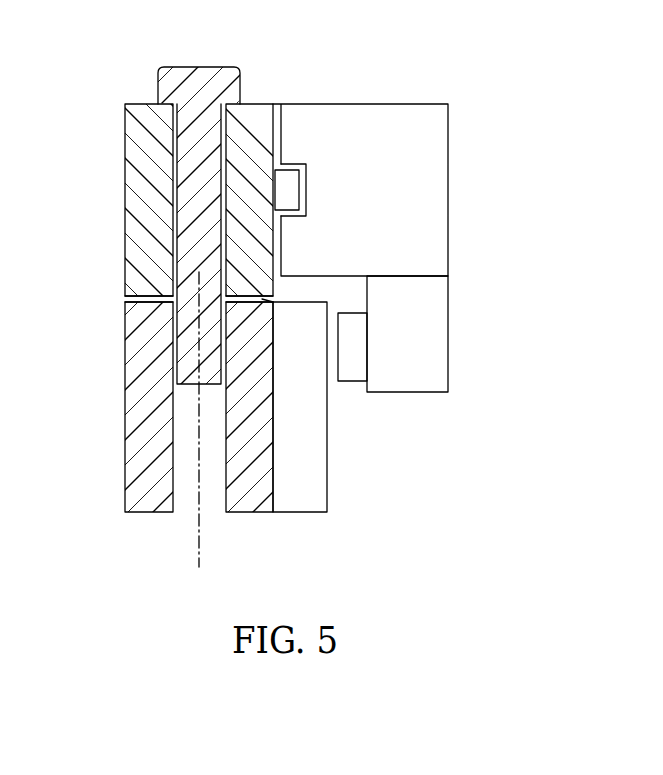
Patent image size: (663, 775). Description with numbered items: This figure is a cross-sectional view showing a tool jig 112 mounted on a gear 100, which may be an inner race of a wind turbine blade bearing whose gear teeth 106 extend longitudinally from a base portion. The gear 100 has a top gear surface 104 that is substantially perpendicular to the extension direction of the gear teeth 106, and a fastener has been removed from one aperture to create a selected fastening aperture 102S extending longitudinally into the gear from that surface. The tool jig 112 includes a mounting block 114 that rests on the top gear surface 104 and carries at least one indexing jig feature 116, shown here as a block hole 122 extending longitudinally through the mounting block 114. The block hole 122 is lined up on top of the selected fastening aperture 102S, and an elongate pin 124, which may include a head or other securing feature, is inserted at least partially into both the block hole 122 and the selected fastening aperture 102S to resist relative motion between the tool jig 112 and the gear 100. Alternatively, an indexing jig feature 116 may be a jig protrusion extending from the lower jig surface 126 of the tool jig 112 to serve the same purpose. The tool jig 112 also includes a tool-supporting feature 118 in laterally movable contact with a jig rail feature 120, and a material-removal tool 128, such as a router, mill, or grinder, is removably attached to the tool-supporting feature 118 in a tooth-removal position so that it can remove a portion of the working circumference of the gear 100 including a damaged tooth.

The gear 100 is at (107, 532).
The selected fastening aperture 102S is at (212, 505).
The top gear surface 104 is at (141, 300).
The gear teeth 106 is at (328, 521).
The tool jig 112 is at (484, 129).
The mounting block 114 is at (140, 130).
The indexing jig feature 116 is at (198, 498).
The tool-supporting feature 118 is at (360, 125).
The jig rail feature 120 is at (297, 152).
The block hole 122 is at (185, 151).
The elongate pin 124 is at (200, 140).
The lower jig surface 126 is at (262, 299).
The material-removal tool 128 is at (415, 335).